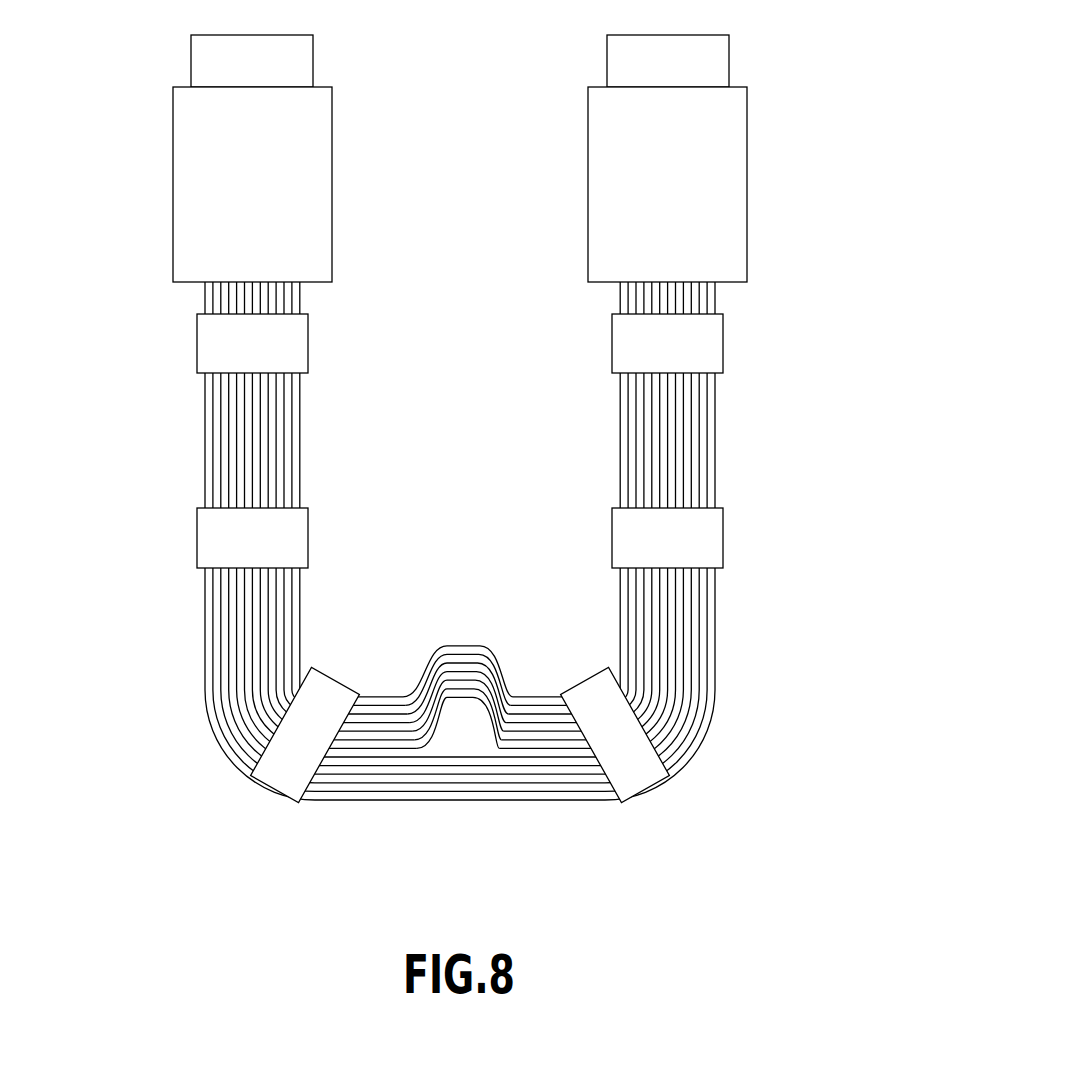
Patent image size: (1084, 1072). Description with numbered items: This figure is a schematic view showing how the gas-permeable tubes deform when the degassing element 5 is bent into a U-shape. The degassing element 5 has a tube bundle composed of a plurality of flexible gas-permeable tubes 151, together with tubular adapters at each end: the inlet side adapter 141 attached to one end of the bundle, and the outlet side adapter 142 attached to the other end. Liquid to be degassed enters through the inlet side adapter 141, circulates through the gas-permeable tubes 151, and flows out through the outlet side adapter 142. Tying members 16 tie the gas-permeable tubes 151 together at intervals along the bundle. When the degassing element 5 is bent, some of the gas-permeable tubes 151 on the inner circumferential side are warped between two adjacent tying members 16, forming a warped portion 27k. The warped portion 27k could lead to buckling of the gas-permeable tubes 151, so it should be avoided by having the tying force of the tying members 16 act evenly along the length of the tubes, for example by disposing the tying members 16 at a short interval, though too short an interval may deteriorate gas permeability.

The degassing element 5 is at (862, 100).
The inlet side adapter 141 is at (192, 184).
The outlet side adapter 142 is at (728, 191).
The gas-permeable tubes 151 is at (513, 541).
The tying members 16 is at (282, 768).
The warped portion 27k is at (475, 640).